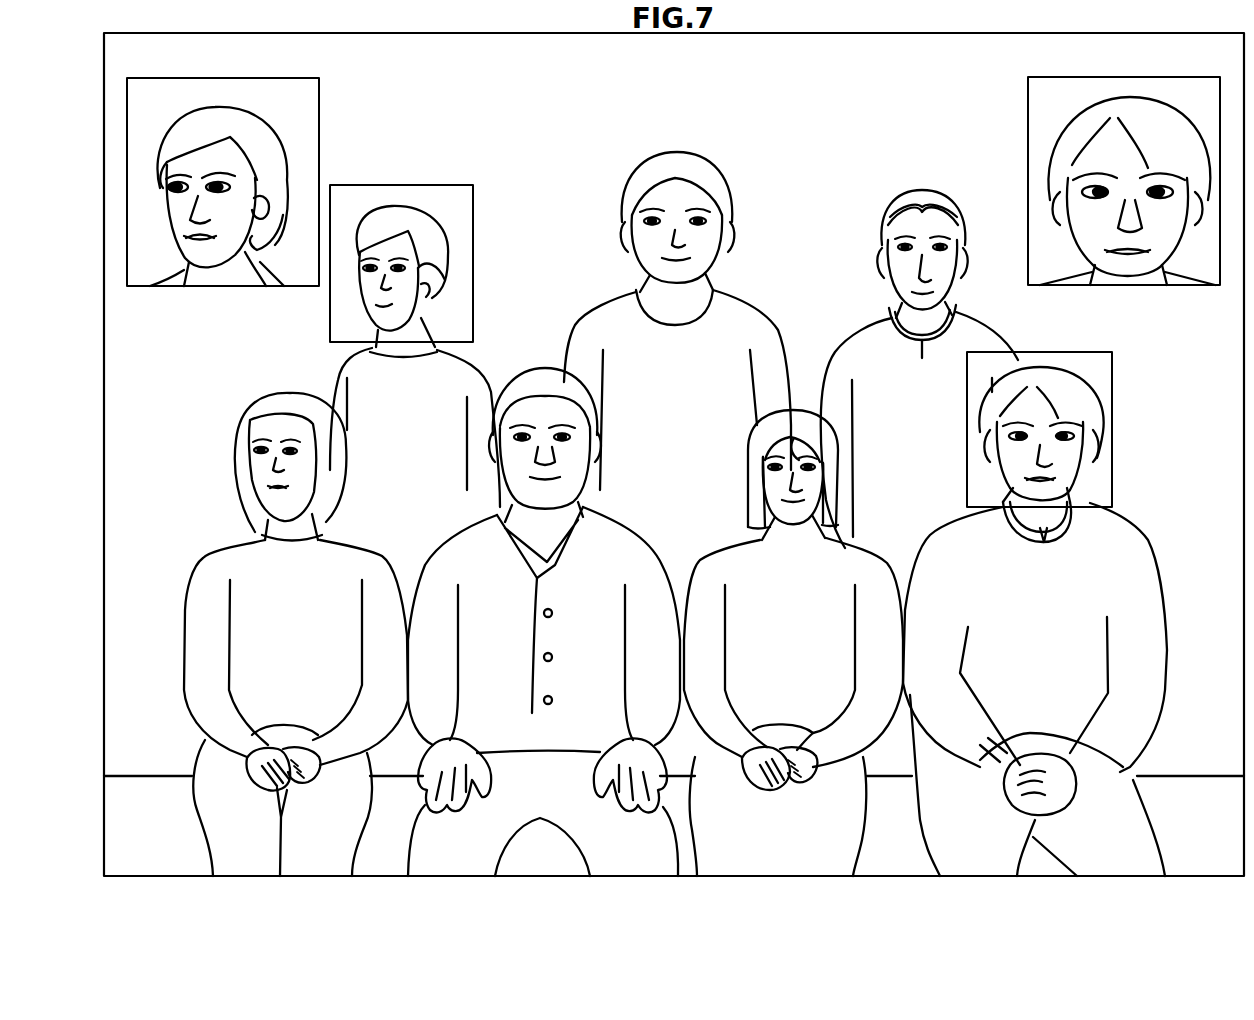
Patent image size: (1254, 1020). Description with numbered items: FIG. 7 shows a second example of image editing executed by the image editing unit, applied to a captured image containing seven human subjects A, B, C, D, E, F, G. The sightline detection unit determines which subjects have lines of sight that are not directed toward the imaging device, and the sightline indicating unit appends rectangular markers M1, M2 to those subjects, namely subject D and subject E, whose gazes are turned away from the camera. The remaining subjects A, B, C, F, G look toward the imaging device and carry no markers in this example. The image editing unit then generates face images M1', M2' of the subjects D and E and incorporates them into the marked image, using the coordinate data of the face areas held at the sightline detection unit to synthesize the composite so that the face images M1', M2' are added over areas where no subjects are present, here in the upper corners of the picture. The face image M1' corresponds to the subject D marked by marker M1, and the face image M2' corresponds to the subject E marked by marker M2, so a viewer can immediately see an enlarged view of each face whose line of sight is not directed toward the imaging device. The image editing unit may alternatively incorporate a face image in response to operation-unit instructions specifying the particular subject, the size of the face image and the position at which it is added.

The subject A is at (270, 393).
The subject B is at (543, 368).
The subject C is at (803, 410).
The subject D is at (1127, 93).
The subject E is at (207, 108).
The subject F is at (675, 155).
The subject G is at (920, 188).
The rectangular marker M1 is at (1075, 429).
The rectangular marker M2 is at (436, 263).
The face image M1' is at (1124, 209).
The face image M2' is at (223, 210).